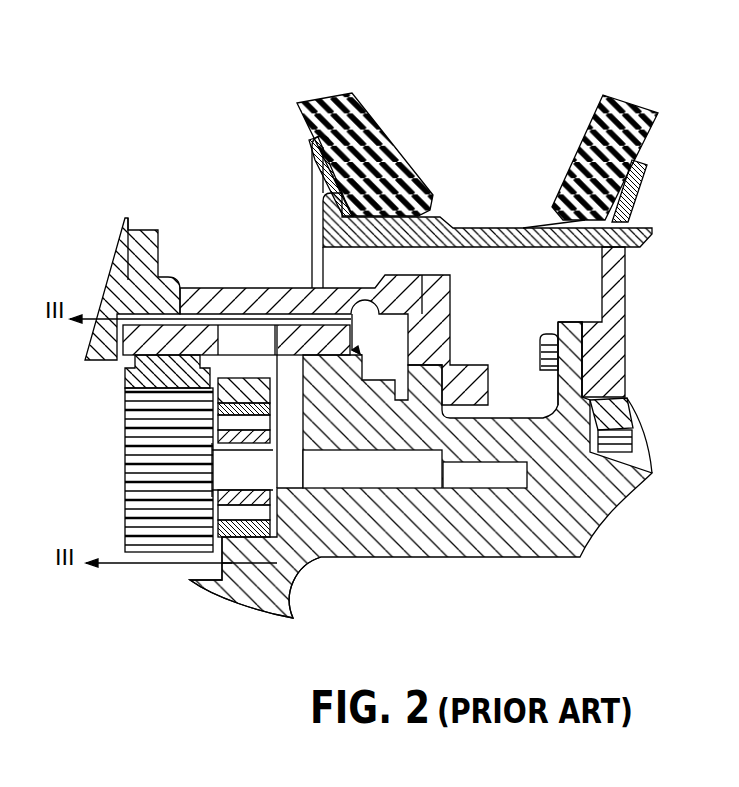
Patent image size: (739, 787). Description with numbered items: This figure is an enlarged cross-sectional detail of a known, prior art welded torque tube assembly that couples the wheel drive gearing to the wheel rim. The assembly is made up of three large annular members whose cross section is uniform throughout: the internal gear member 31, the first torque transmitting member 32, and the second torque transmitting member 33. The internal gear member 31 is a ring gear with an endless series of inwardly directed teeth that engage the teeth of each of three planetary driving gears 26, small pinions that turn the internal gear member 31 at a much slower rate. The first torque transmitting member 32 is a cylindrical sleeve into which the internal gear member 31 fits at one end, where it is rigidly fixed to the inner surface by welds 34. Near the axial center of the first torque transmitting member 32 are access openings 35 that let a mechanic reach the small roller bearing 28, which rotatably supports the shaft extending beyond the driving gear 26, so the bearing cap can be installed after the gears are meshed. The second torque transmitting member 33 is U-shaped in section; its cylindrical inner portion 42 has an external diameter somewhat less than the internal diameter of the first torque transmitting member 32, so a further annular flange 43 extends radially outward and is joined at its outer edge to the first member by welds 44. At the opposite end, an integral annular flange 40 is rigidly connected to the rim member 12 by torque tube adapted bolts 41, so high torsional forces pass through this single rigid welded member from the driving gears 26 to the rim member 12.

The rim member 12 is at (613, 383).
The planetary driving gear 26 is at (147, 489).
The roller bearing 28 is at (296, 598).
The internal gear member 31 is at (135, 383).
The first torque transmitting member 32 is at (206, 337).
The second torque transmitting member 33 is at (442, 445).
The welds 34 is at (255, 355).
The access openings 35 is at (267, 340).
The annular flange 40 is at (570, 334).
The torque tube adapted bolts 41 is at (550, 332).
The cylindrical inner portion 42 is at (552, 455).
The further annular flange 43 is at (322, 423).
The welds 44 is at (384, 343).